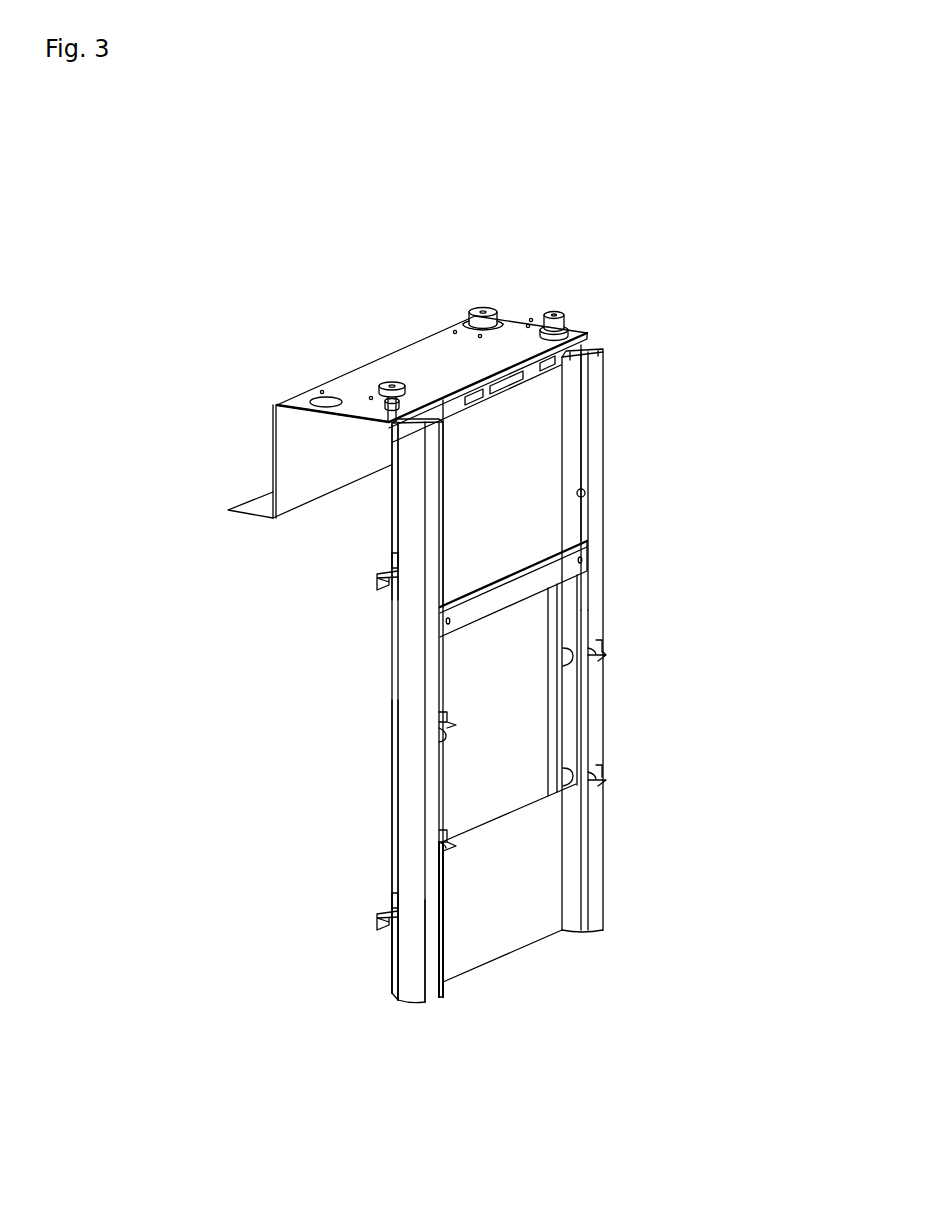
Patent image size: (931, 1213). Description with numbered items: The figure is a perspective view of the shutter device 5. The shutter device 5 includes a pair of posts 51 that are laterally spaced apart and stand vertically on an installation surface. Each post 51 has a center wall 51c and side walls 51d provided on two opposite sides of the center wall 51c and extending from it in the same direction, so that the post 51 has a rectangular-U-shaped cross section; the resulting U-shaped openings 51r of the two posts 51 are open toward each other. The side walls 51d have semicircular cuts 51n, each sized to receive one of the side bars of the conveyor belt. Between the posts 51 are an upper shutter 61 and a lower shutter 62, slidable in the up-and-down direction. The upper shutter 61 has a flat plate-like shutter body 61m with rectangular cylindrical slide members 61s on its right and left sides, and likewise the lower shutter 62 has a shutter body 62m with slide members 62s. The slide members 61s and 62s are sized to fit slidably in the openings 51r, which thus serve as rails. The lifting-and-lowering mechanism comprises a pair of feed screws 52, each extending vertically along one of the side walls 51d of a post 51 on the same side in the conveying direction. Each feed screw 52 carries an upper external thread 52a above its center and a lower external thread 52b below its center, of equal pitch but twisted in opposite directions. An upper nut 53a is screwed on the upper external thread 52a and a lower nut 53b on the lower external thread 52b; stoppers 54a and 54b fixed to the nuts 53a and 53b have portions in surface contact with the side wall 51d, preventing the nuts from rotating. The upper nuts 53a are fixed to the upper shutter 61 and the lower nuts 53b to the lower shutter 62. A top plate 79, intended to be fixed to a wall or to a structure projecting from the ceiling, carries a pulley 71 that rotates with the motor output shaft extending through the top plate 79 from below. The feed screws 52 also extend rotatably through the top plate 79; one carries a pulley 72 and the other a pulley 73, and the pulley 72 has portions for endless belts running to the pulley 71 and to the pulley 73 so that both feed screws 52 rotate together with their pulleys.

The shutter device 5 is at (611, 266).
The post 51 is at (614, 588).
The center wall 51c is at (413, 983).
The side wall 51d is at (398, 965).
The semicircular cut 51n is at (598, 663).
The U-shaped opening 51r is at (585, 495).
The feed screw 52 is at (396, 680).
The upper external thread 52a is at (397, 510).
The lower external thread 52b is at (397, 797).
The upper nut 53a is at (386, 572).
The lower nut 53b is at (386, 910).
The stopper 54a is at (386, 588).
The stopper 54b is at (388, 928).
The upper shutter 61 is at (705, 358).
The shutter body 61m is at (540, 435).
The slide member 61s is at (590, 380).
The lower shutter 62 is at (688, 848).
The shutter body 62m is at (540, 908).
The slide member 62s is at (590, 840).
The pulley 71 is at (487, 316).
The pulley 72 is at (553, 315).
The pulley 73 is at (392, 383).
The top plate 79 is at (430, 348).